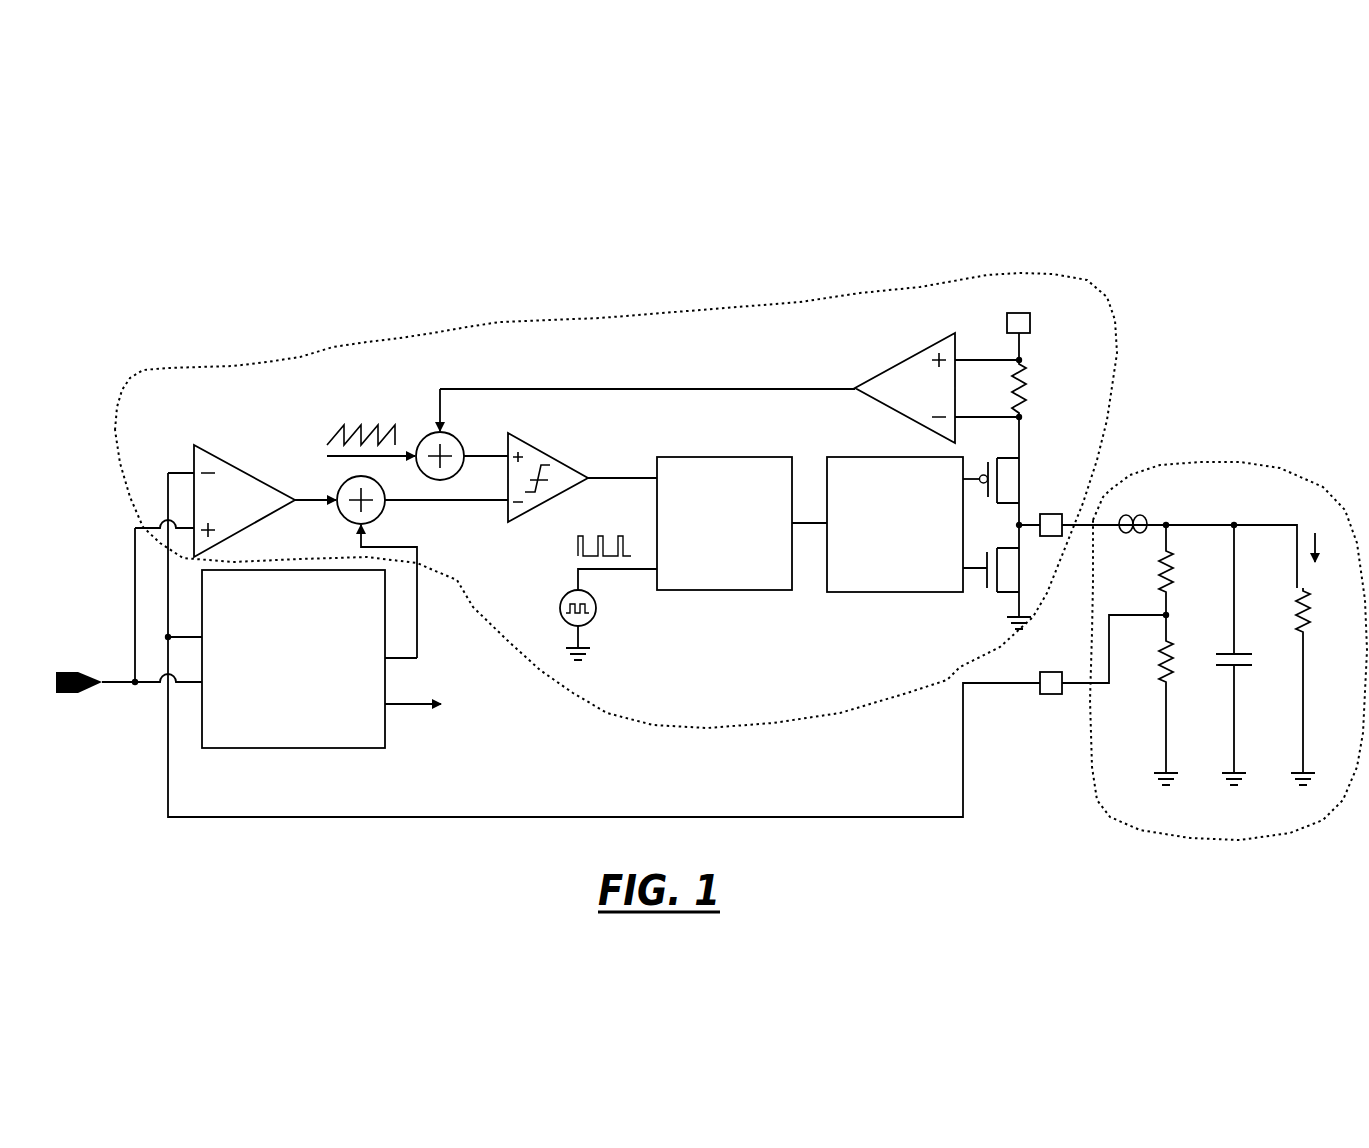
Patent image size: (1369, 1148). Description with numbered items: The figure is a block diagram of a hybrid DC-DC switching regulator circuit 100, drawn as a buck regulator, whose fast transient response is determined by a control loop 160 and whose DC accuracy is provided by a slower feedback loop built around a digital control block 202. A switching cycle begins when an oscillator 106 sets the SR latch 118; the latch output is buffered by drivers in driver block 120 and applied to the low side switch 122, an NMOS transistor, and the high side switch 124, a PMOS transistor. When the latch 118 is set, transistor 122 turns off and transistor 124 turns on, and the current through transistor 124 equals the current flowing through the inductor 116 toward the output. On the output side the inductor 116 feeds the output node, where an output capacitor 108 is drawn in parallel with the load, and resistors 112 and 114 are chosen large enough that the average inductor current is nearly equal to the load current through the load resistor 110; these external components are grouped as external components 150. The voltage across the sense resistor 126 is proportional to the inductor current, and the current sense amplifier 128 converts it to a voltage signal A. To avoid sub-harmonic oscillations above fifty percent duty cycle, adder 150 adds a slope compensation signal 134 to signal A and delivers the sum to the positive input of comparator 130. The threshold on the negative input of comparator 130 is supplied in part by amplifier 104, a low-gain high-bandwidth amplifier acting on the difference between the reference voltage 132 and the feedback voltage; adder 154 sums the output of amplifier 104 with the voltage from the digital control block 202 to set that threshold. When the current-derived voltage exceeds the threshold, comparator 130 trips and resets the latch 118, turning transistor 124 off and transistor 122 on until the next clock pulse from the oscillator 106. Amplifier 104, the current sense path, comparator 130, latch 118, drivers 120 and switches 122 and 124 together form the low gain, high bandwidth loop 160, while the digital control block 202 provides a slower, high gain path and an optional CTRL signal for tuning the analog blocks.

The hybrid DC-DC switching regulator circuit 100 is at (872, 230).
The amplifier 104 is at (225, 455).
The oscillator 106 is at (597, 617).
The output capacitor COUT 108 is at (1222, 670).
The load resistor 110 is at (1312, 622).
The resistor 112 is at (1155, 670).
The resistor 114 is at (1183, 547).
The inductor 116 is at (1148, 492).
The SR latch 118 is at (718, 595).
The driver block 120 is at (873, 598).
The low side switch 122 is at (995, 607).
The high side switch 124 is at (1040, 478).
The sense resistor 126 is at (1045, 370).
The current sense amplifier 128 is at (870, 367).
The comparator 130 is at (555, 450).
The reference voltage 132 is at (68, 700).
The slope compensation signal 134 is at (318, 435).
The adder 150 is at (463, 432).
The adder 154 is at (390, 512).
The control loop 160 is at (345, 350).
The digital control block 202 is at (390, 750).